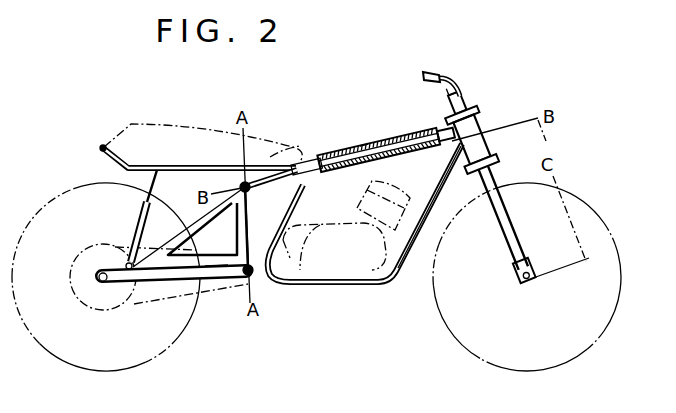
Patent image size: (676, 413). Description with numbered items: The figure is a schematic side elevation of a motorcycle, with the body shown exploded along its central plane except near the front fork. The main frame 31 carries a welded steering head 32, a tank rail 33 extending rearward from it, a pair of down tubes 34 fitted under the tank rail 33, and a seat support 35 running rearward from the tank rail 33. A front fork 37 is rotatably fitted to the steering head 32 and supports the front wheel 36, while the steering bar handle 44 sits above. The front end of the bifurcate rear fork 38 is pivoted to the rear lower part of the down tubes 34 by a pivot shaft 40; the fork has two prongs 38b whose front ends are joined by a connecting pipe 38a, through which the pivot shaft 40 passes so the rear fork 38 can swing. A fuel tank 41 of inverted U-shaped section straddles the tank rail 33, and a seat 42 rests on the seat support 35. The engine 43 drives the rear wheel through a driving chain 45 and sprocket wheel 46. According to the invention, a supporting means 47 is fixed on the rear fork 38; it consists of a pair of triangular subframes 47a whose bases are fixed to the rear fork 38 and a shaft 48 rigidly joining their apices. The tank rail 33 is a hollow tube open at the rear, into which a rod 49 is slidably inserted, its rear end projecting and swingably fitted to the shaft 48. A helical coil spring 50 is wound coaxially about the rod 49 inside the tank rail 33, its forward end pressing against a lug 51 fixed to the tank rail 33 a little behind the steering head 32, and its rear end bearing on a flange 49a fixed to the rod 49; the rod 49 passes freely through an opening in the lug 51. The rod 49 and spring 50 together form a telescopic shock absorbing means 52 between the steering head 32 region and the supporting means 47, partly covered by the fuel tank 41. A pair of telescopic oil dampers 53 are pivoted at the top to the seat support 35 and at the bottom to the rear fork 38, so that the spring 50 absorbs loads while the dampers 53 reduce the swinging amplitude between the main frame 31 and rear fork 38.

The main frame 31 is at (365, 239).
The steering head 32 is at (482, 122).
The tank rail 33 is at (383, 136).
The down tubes 34 is at (400, 262).
The seat support 35 is at (150, 166).
The front wheel 36 is at (27, 336).
The front fork 37 is at (512, 238).
The bifurcate rear fork 38 is at (186, 286).
The connecting pipe 38a is at (288, 270).
The prongs 38b is at (216, 274).
The pivot shaft 40 is at (256, 278).
The fuel tank 41 is at (367, 128).
The seat 42 is at (143, 138).
The engine 43 is at (345, 269).
The steering bar handle 44 is at (463, 84).
The driving chain 45 is at (170, 301).
The sprocket wheel 46 is at (97, 311).
The supporting means 47 is at (178, 235).
The triangular subframes 47a is at (202, 229).
The shaft 48 is at (243, 184).
The rod 49 is at (277, 166).
The flange 49a is at (313, 160).
The helical coil spring 50 is at (374, 120).
The lug 51 is at (425, 132).
The telescopic shock absorbing means 52 is at (342, 150).
The telescopic oil dampers 53 is at (137, 214).